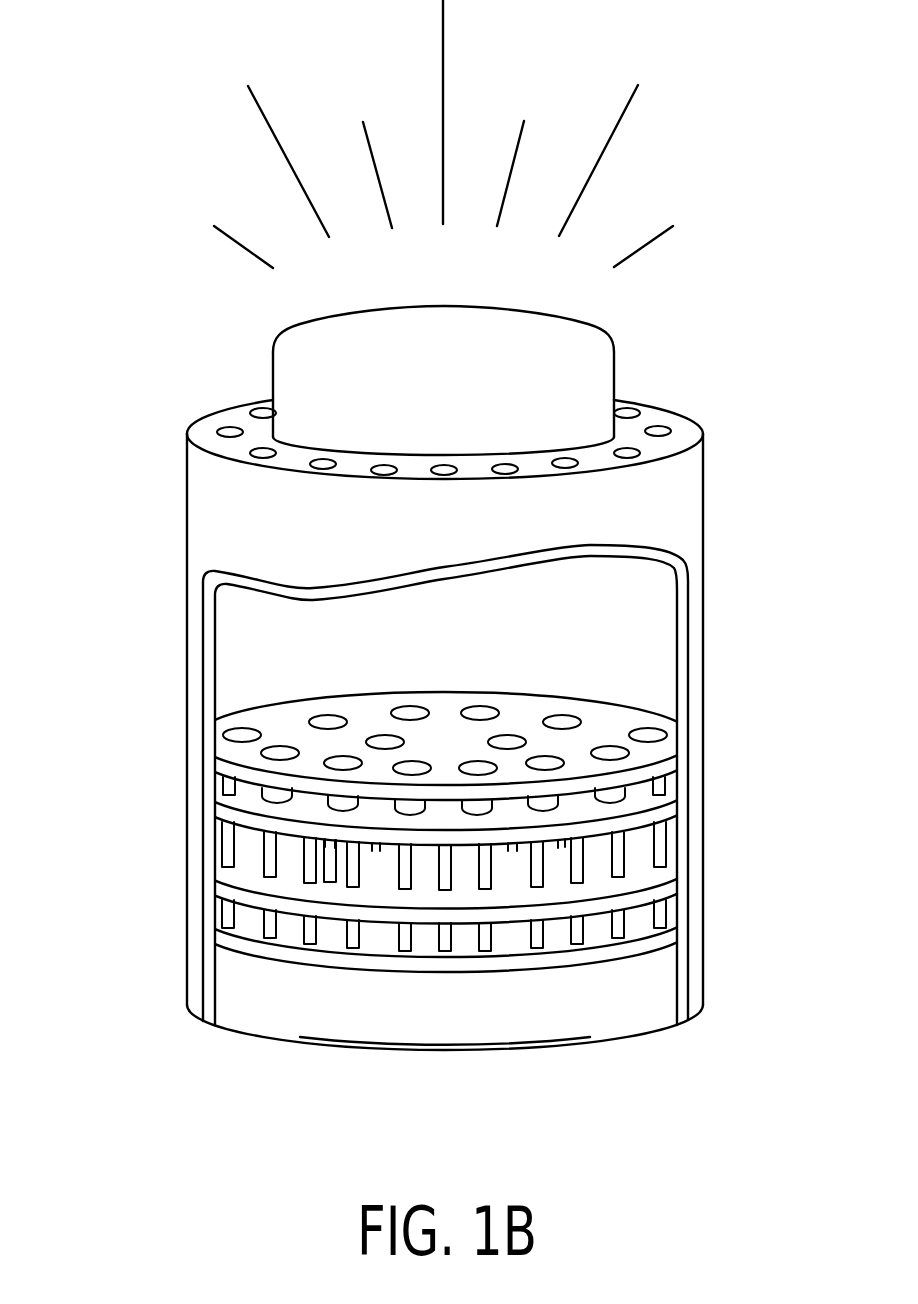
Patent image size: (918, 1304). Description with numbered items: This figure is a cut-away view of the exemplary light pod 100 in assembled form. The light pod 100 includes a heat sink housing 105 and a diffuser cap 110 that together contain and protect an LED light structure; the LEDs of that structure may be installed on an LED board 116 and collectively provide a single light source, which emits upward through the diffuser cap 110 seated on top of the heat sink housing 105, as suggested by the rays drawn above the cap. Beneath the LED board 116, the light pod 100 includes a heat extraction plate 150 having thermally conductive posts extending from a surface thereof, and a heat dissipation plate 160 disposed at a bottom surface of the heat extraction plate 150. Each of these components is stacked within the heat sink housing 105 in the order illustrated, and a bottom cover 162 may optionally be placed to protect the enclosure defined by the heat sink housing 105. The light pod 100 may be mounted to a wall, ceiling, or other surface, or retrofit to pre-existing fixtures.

The light pod 100 is at (192, 104).
The heat sink housing 105 is at (186, 725).
The diffuser cap 110 is at (273, 372).
The LED board 116 is at (667, 817).
The heat extraction plate 150 is at (670, 890).
The heat dissipation plate 160 is at (397, 967).
The bottom cover 162 is at (547, 1048).